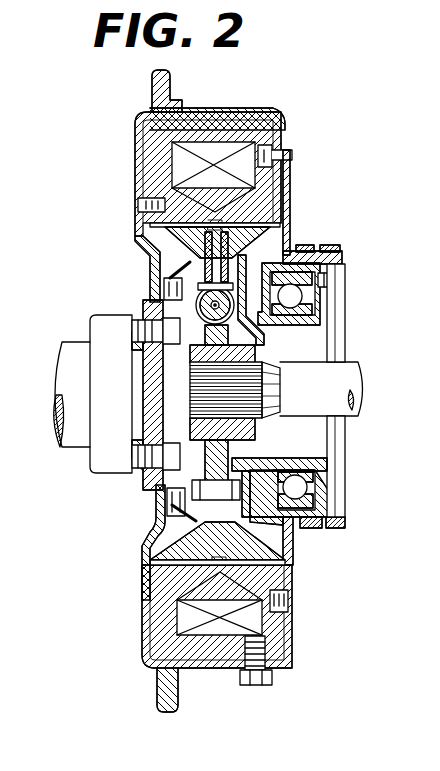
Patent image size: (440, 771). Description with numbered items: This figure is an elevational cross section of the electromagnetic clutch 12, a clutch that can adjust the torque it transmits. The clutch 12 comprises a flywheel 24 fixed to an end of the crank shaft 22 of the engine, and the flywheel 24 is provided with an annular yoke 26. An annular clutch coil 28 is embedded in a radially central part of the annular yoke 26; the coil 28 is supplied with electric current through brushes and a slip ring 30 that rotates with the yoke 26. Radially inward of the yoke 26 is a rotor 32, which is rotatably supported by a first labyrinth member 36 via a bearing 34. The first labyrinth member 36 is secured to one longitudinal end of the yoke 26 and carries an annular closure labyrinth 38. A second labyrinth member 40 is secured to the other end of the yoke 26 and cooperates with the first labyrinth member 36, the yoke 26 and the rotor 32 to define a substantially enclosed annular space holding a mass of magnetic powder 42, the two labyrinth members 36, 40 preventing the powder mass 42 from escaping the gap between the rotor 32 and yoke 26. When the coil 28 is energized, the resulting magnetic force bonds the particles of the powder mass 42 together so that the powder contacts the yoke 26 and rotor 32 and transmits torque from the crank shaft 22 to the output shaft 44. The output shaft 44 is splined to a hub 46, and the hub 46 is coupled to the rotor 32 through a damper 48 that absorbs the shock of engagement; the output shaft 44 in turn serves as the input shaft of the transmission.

The electromagnetic clutch 12 is at (104, 131).
The crank shaft 22 is at (64, 355).
The flywheel 24 is at (279, 97).
The annular yoke 26 is at (283, 135).
The annular clutch coil 28 is at (208, 147).
The slip ring 30 is at (306, 250).
The rotor 32 is at (274, 562).
The bearing 34 is at (292, 297).
The first labyrinth member 36 is at (294, 532).
The annular closure labyrinth 38 is at (292, 234).
The second labyrinth member 40 is at (150, 273).
The magnetic powder mass 42 is at (150, 556).
The output shaft 44 is at (340, 381).
The hub 46 is at (254, 428).
The damper 48 is at (242, 332).